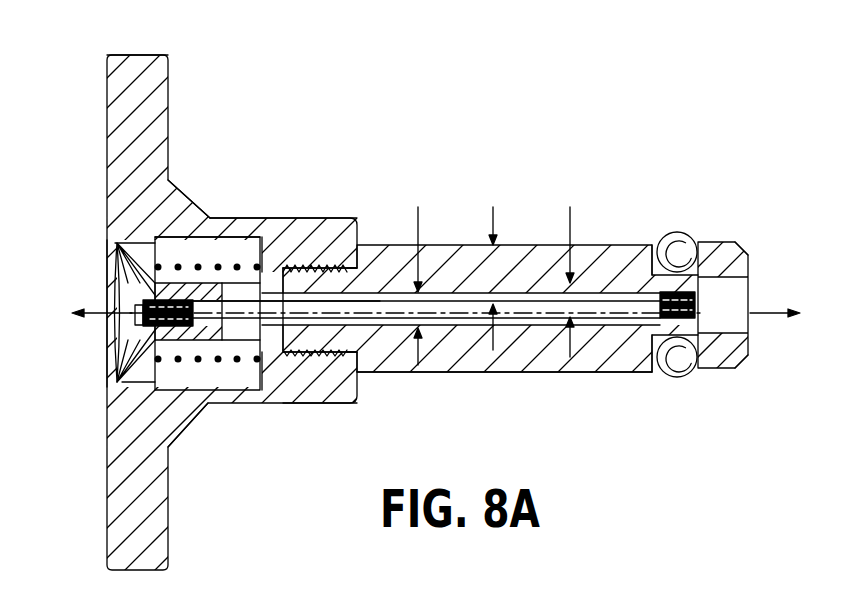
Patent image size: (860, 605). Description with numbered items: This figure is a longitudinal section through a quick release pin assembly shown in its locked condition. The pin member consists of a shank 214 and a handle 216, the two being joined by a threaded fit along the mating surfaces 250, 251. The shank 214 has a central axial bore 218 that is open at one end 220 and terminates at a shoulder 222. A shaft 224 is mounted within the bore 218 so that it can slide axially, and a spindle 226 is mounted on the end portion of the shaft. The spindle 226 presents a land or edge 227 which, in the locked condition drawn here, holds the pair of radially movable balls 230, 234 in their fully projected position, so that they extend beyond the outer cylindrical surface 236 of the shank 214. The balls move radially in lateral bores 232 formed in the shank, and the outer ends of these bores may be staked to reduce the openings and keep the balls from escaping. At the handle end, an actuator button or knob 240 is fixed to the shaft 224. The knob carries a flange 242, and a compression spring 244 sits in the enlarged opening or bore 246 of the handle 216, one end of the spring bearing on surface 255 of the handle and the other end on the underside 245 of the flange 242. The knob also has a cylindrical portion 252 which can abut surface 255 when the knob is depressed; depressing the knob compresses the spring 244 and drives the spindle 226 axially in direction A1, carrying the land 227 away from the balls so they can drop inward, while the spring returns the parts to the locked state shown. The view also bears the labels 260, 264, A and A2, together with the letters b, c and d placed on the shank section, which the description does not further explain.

The shank 214 is at (459, 246).
The handle 216 is at (115, 128).
The central axial bore 218 is at (385, 320).
The open end 220 is at (748, 327).
The shoulder 222 is at (271, 243).
The shaft 224 is at (523, 303).
The spindle 226 is at (652, 322).
The land or edge 227 is at (634, 284).
The ball 230 is at (686, 236).
The lateral bores 232 is at (746, 252).
The ball 234 is at (683, 373).
The outer cylindrical surface 236 is at (480, 374).
The actuator button or knob 240 is at (120, 381).
The flange 242 is at (122, 251).
The compression spring 244 is at (233, 365).
The underside of the flange 245 is at (190, 215).
The enlarged opening or bore 246 is at (247, 372).
The threaded surface 250 is at (333, 243).
The threaded surface 251 is at (333, 400).
The cylindrical portion 252 is at (112, 410).
The surface of the handle 255 is at (240, 238).
The flange top end 260 is at (124, 56).
The flange inner wall 264 is at (108, 290).
The bore axis region A is at (601, 292).
The direction A1 is at (85, 314).
The direction A2 is at (791, 312).
The dimension b is at (493, 266).
The dimension c is at (416, 274).
The dimension d is at (570, 270).